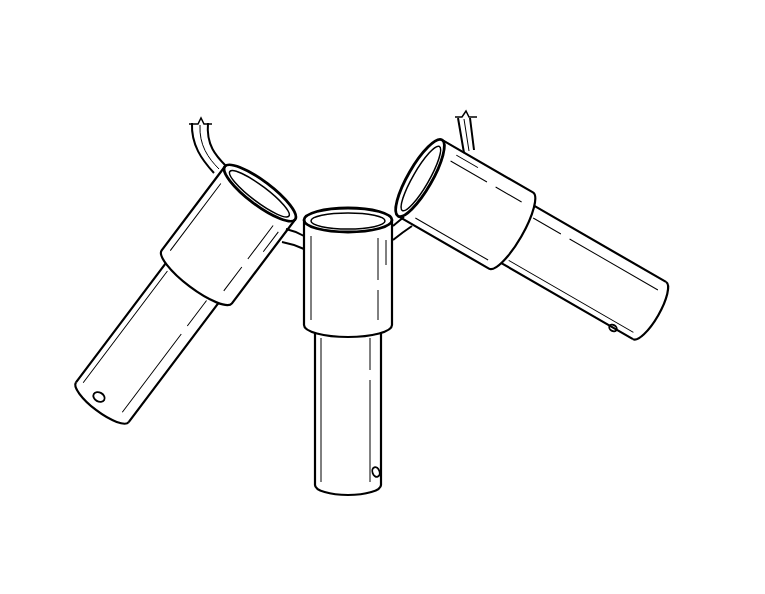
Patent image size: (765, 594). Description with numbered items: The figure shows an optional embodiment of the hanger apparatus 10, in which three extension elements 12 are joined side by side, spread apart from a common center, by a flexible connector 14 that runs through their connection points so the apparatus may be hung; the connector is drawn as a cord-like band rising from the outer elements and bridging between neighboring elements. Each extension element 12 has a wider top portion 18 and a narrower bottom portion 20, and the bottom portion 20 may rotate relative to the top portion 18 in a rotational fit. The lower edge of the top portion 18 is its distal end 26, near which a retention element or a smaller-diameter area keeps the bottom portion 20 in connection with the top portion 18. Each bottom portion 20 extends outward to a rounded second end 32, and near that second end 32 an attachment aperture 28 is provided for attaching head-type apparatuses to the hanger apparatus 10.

The hanger apparatus 10 is at (106, 97).
The extension element 12 is at (197, 203).
The flexible connector 14 is at (195, 140).
The top portion 18 is at (168, 237).
The bottom portion 20 is at (142, 287).
The distal end 26 is at (489, 265).
The attachment aperture 28 is at (95, 399).
The second end 32 is at (126, 414).